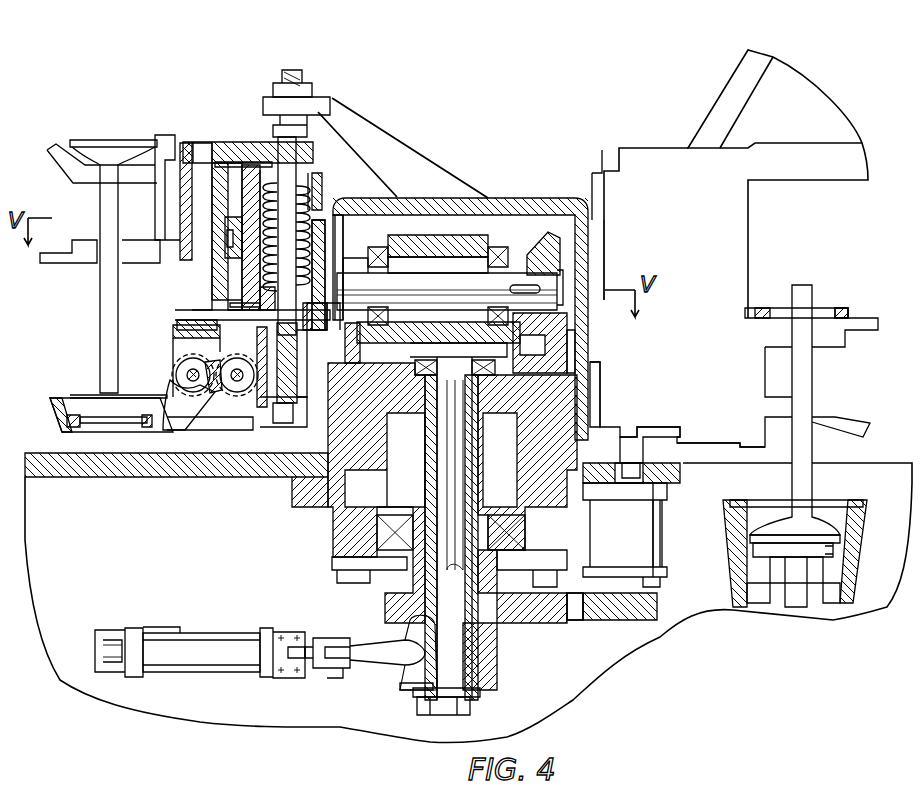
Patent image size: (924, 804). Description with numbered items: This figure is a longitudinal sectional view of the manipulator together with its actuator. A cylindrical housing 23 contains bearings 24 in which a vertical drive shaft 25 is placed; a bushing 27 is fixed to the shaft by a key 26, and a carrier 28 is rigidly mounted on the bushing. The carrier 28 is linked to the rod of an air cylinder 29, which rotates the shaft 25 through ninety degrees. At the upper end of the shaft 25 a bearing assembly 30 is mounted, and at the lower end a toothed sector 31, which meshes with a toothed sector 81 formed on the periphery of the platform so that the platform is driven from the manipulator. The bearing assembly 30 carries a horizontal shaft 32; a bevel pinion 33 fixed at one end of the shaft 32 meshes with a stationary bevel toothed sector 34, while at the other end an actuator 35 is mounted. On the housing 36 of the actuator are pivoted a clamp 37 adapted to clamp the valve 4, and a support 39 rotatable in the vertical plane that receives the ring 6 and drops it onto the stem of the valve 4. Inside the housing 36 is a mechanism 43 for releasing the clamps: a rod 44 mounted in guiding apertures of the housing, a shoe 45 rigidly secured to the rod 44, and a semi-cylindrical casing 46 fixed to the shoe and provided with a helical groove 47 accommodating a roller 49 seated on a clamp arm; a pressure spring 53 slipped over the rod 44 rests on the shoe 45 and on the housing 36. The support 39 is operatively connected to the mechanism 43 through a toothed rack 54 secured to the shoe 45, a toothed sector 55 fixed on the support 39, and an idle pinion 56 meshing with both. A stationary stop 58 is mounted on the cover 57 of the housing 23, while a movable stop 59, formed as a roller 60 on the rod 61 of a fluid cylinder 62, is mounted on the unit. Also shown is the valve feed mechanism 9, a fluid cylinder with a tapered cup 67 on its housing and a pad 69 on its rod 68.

The valve 4 is at (805, 378).
The ring 6 is at (840, 310).
The valve feed mechanism 9 is at (861, 608).
The cylindrical housing 23 is at (580, 620).
The bearings 24 is at (490, 377).
The vertical drive shaft 25 is at (478, 692).
The key 26 is at (418, 697).
The bushing 27 is at (487, 665).
The carrier 28 is at (392, 668).
The air cylinder 29 is at (200, 635).
The bearing assembly 30 is at (482, 282).
The toothed sector 31 is at (530, 618).
The horizontal shaft 32 is at (430, 272).
The bevel pinion 33 is at (528, 240).
The stationary bevel toothed sector 34 is at (572, 355).
The actuator 35 is at (325, 208).
The housing of the actuator 36 is at (340, 212).
The clamp 37 is at (86, 260).
The support 39 is at (56, 406).
The mechanism 43 is at (249, 296).
The rod 44 is at (300, 160).
The shoe 45 is at (270, 182).
The semi-cylindrical casing 46 is at (246, 182).
The helical groove 47 is at (230, 233).
The roller 49 is at (228, 248).
The pressure spring 53 is at (207, 163).
The toothed rack 54 is at (284, 405).
The toothed sector 55 is at (176, 366).
The idle pinion 56 is at (215, 412).
The cover 57 is at (562, 198).
The stationary stop 58 is at (325, 97).
The movable stop 59 is at (672, 553).
The roller 60 is at (635, 443).
The rod 61 is at (655, 460).
The fluid cylinder 62 is at (640, 528).
The tapered cup 67 is at (868, 515).
The rod 68 is at (798, 600).
The pad 69 is at (855, 552).
The toothed sector 81 is at (640, 612).